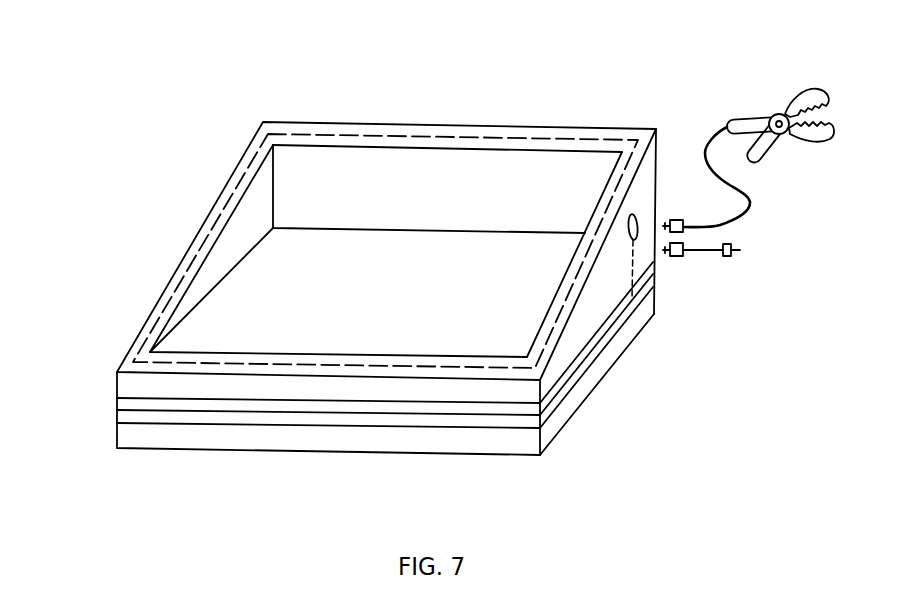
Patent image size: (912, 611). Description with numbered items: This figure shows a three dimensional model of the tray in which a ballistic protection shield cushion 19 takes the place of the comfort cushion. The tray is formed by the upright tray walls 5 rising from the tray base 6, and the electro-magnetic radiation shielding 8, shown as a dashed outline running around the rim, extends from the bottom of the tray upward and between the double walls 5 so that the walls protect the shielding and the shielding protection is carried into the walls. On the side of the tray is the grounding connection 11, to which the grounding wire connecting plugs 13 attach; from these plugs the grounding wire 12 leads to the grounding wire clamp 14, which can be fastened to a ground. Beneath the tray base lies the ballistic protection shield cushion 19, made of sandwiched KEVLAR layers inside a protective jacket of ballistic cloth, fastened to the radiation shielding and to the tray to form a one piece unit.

The tray walls 5 is at (447, 189).
The tray base 6 is at (338, 292).
The electro-magnetic radiation shielding 8 is at (268, 142).
The grounding connection 11 is at (656, 176).
The grounding wire 12 is at (707, 250).
The grounding wire connecting plugs 13 is at (728, 256).
The grounding wire clamps 14 is at (813, 88).
The rated armed threat level ballistic protection shield cushion 19 is at (600, 380).